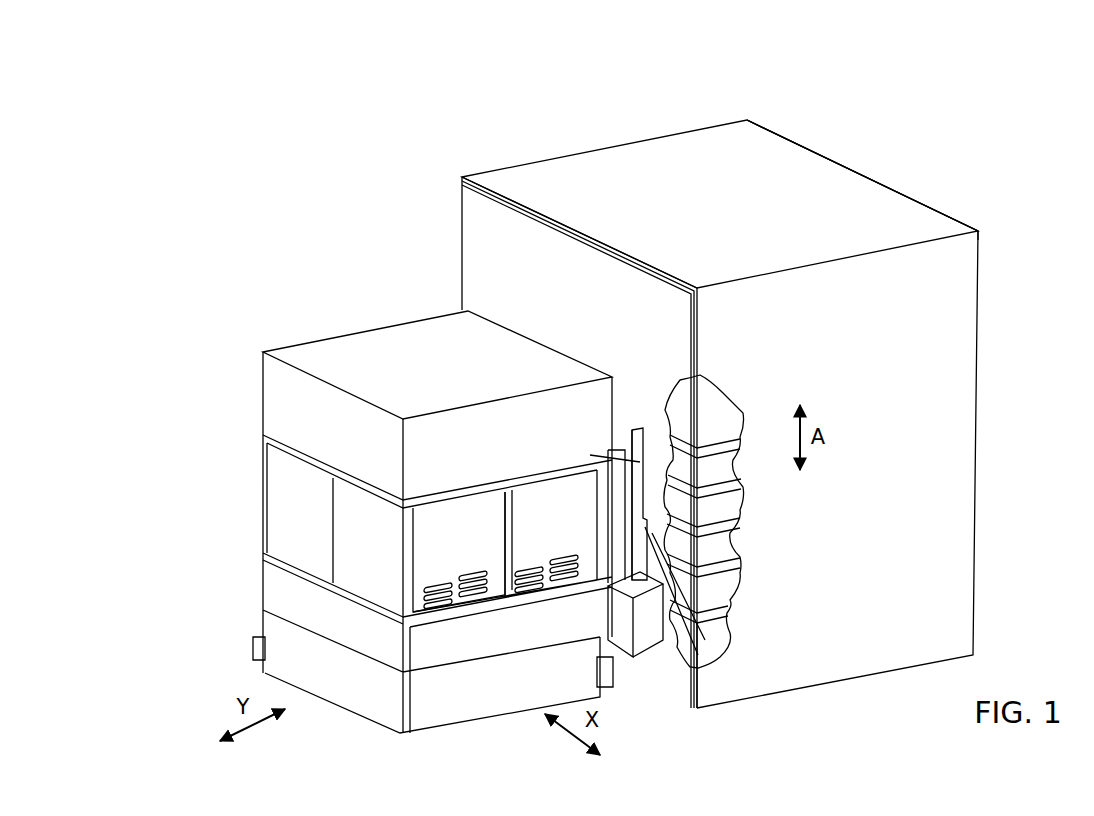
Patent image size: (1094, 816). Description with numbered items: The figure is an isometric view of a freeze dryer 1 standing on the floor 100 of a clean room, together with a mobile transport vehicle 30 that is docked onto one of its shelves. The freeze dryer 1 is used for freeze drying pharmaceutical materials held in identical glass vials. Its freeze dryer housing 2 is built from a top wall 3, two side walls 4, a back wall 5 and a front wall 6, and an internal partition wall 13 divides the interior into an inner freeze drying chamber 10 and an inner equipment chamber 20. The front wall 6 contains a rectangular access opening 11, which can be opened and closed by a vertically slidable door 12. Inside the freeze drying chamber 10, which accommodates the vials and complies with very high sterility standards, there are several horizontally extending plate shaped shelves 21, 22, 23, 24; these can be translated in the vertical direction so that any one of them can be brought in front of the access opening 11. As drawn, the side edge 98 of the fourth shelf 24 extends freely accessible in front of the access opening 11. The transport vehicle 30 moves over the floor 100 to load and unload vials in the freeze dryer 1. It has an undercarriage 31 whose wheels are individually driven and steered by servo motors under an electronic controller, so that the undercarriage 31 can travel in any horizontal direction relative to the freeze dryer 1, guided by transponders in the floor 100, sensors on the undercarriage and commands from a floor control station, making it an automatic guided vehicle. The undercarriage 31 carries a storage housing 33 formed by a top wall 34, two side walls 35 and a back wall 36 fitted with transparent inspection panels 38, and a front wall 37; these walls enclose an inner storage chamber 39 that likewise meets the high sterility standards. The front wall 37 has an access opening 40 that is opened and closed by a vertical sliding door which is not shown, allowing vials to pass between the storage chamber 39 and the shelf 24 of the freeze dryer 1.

The freeze dryer 1 is at (607, 140).
The freeze dryer housing 2 is at (722, 123).
The top wall 3 is at (540, 172).
The side walls 4 is at (660, 135).
The back wall 5 is at (868, 175).
The front wall 6 is at (497, 232).
The freeze drying chamber 10 is at (727, 437).
The access opening 11 is at (700, 600).
The vertically slidable door 12 is at (620, 428).
The internal partition wall 13 is at (713, 613).
The equipment chamber 20 is at (722, 641).
The shelf 21 is at (735, 445).
The shelf 22 is at (730, 490).
The shelf 23 is at (720, 532).
The fourth shelf 24 is at (735, 560).
The transport vehicle 30 is at (268, 284).
The undercarriage 31 is at (262, 642).
The storage housing 33 is at (268, 380).
The top wall 34 is at (376, 347).
The side walls 35 is at (290, 345).
The back wall 36 is at (323, 418).
The front wall 37 is at (540, 342).
The transparent inspection panels 38 is at (368, 565).
The storage chamber 39 is at (474, 547).
The access opening 40 is at (580, 505).
The side edge 98 is at (660, 610).
The floor 100 is at (787, 729).